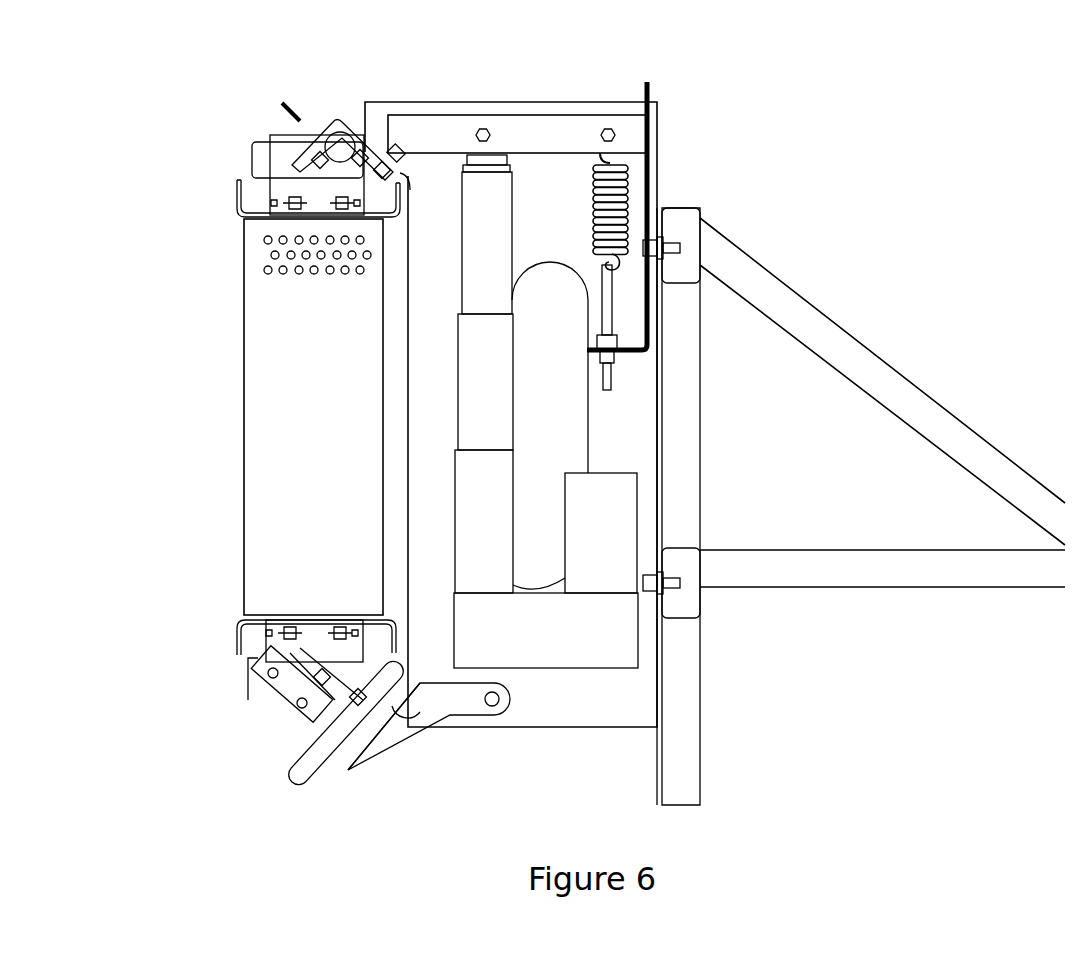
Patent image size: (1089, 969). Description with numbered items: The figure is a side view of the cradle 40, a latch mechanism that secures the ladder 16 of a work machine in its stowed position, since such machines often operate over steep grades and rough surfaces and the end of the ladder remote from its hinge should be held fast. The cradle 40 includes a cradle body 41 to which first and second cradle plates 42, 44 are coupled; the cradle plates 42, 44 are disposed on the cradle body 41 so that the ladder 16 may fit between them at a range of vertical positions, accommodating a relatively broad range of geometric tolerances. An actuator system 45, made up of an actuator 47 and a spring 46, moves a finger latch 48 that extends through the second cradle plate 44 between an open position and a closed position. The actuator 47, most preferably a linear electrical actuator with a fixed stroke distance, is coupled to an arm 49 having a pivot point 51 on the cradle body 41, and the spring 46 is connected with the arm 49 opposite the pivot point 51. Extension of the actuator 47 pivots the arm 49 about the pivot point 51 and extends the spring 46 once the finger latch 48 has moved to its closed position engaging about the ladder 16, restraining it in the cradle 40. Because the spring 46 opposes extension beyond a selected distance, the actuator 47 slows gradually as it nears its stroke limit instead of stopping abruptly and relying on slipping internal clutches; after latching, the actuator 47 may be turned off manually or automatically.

The ladder 16 is at (285, 418).
The cradle 40 is at (296, 744).
The cradle body 41 is at (584, 133).
The first cradle plate 42 is at (298, 118).
The second cradle plate 44 is at (308, 770).
The actuator system 45 is at (541, 262).
The spring 46 is at (640, 198).
The actuator 47 is at (485, 378).
The finger latch 48 is at (252, 712).
The arm 49 is at (456, 128).
The pivot point 51 is at (399, 126).